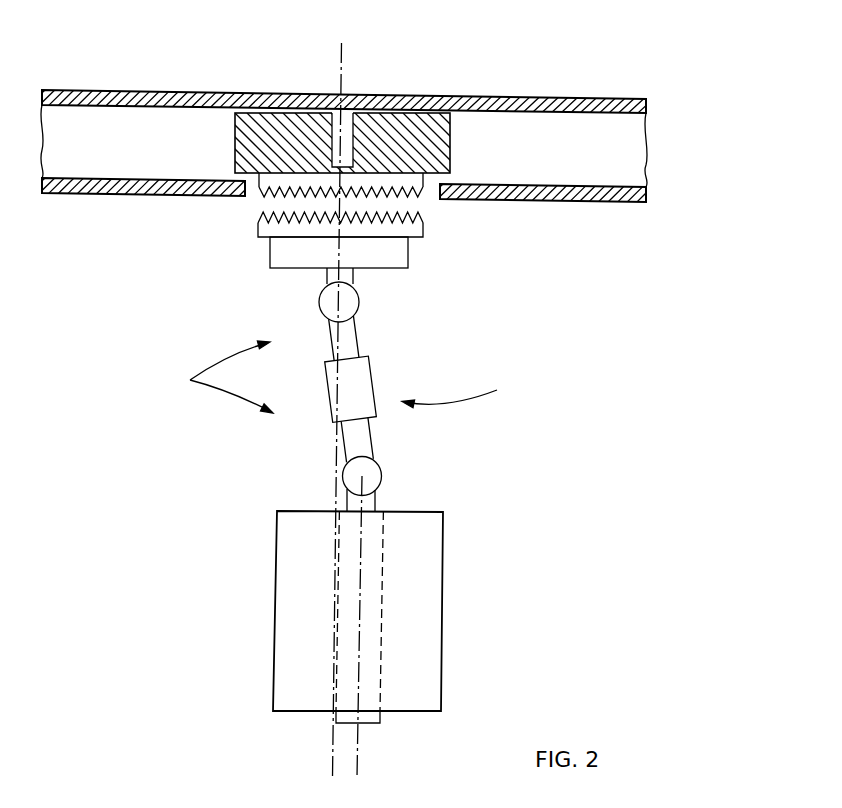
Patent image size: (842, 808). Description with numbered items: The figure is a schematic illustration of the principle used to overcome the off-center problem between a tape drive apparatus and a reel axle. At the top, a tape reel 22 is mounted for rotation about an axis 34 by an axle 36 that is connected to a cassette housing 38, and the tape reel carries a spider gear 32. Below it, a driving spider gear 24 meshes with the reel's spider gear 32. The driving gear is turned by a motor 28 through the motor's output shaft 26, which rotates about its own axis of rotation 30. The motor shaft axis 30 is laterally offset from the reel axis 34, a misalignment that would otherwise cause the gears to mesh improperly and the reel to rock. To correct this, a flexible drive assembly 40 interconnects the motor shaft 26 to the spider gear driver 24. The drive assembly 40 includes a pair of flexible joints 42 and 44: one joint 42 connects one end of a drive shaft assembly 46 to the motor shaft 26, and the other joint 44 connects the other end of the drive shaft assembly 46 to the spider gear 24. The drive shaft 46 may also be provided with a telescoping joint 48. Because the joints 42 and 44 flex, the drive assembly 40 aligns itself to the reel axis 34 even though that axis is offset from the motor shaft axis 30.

The tape reel 22 is at (233, 147).
The spider gear 24 is at (423, 228).
The output shaft 26 is at (377, 504).
The motor 28 is at (443, 577).
The axis of rotation 30 is at (358, 755).
The spider gear 32 is at (270, 193).
The axis 34 is at (340, 58).
The axle 36 is at (347, 140).
The cassette housing 38 is at (583, 99).
The flexible drive assembly 40 is at (215, 377).
The flexible joint 42 is at (343, 483).
The flexible joint 44 is at (359, 307).
The drive shaft assembly 46 is at (464, 392).
The telescoping joint 48 is at (373, 375).